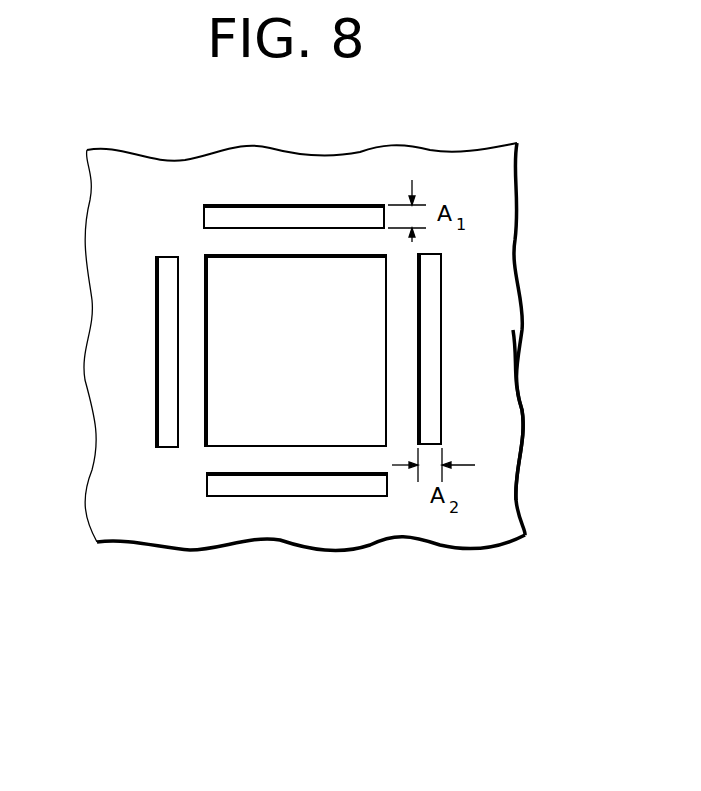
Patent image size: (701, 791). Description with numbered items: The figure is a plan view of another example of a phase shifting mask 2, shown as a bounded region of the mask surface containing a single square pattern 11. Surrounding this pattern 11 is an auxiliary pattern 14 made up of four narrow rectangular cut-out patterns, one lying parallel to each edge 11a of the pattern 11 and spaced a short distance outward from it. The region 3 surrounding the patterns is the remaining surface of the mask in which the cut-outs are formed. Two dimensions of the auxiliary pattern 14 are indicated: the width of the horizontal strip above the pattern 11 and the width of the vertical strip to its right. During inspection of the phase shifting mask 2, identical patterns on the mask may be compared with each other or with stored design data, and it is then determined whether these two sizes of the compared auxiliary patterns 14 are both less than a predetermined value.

The phase shifting mask 2 is at (502, 242).
The light-shielding film 3 is at (507, 402).
The pattern 11 is at (208, 367).
The edge of pattern 11a is at (208, 412).
The auxiliary pattern 14 is at (260, 207).